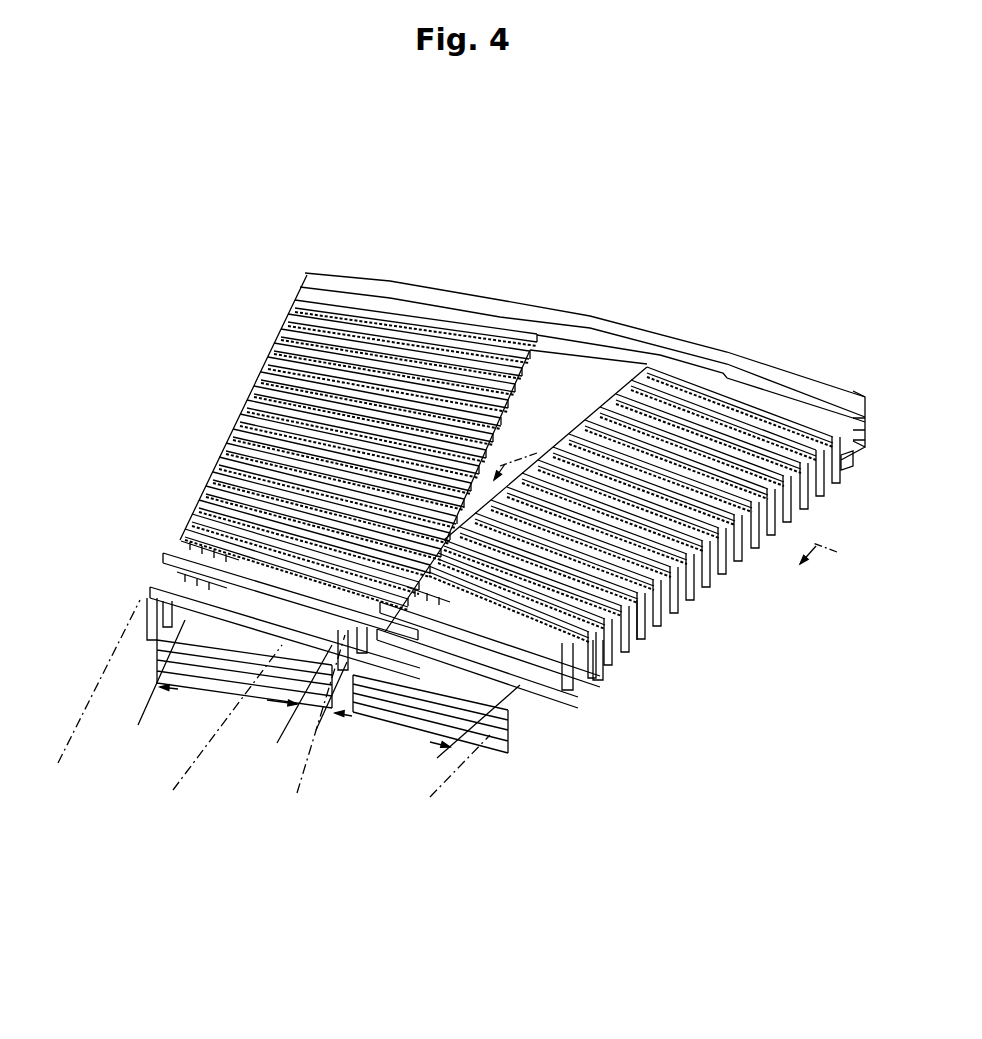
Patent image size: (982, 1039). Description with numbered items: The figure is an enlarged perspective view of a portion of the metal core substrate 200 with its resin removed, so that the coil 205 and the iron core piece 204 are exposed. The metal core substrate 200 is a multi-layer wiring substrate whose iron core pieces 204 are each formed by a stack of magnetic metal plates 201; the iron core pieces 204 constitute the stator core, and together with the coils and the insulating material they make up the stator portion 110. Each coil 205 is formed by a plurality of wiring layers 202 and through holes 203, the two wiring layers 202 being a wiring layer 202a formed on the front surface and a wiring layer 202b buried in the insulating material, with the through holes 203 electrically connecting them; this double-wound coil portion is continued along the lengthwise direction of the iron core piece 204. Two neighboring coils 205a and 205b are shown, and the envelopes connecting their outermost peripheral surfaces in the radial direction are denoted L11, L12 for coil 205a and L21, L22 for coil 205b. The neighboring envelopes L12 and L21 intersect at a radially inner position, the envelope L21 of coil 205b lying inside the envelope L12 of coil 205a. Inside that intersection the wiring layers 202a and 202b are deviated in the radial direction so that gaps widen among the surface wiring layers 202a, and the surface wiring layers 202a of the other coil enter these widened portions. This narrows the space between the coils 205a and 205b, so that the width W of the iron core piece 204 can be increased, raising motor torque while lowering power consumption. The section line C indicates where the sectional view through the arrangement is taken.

The metal core substrate 200 is at (464, 534).
The magnetic metal plate 201 is at (820, 382).
The wiring layer 202 is at (650, 630).
The wiring layer formed on the surface 202a is at (180, 537).
The wiring layer buried in the insulating material 202b is at (180, 545).
The through hole 203 is at (641, 655).
The iron core piece 204 is at (170, 632).
The coil 205 is at (634, 331).
The coil 205a is at (745, 395).
The coil 205b is at (403, 338).
The stator portion 110 is at (717, 610).
The width of the iron core piece W is at (329, 691).
The envelope L11 is at (470, 760).
The envelope L12 is at (227, 743).
The envelope L21 is at (323, 740).
The envelope L22 is at (73, 733).
The section line C- C is at (658, 522).